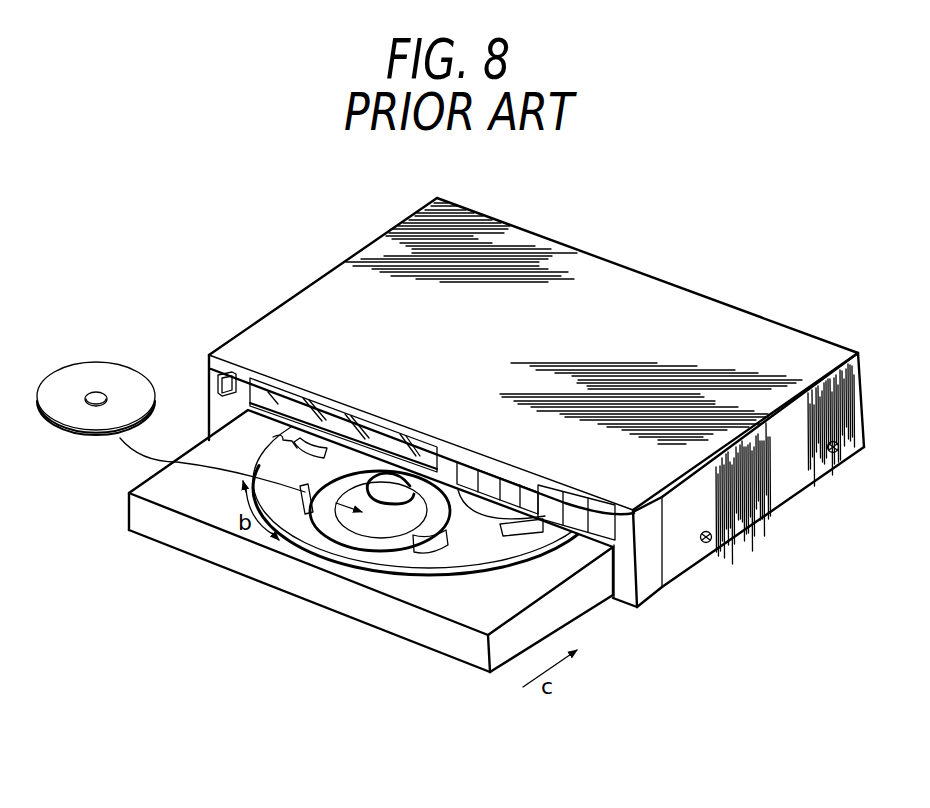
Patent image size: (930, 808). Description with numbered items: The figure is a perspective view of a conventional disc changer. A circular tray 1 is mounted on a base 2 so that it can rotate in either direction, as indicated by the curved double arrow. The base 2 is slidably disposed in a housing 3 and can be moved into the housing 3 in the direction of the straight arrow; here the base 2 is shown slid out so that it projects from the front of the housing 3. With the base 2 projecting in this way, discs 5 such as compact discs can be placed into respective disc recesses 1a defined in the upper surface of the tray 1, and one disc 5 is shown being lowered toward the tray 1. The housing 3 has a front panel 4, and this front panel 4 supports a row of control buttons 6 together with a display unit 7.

The circular tray 1 is at (517, 555).
The disc recess 1a is at (355, 542).
The base 2 is at (445, 643).
The housing 3 is at (752, 520).
The front panel 4 is at (237, 354).
The disc 5 is at (83, 375).
The control buttons 6 is at (578, 507).
The display unit 7 is at (323, 410).